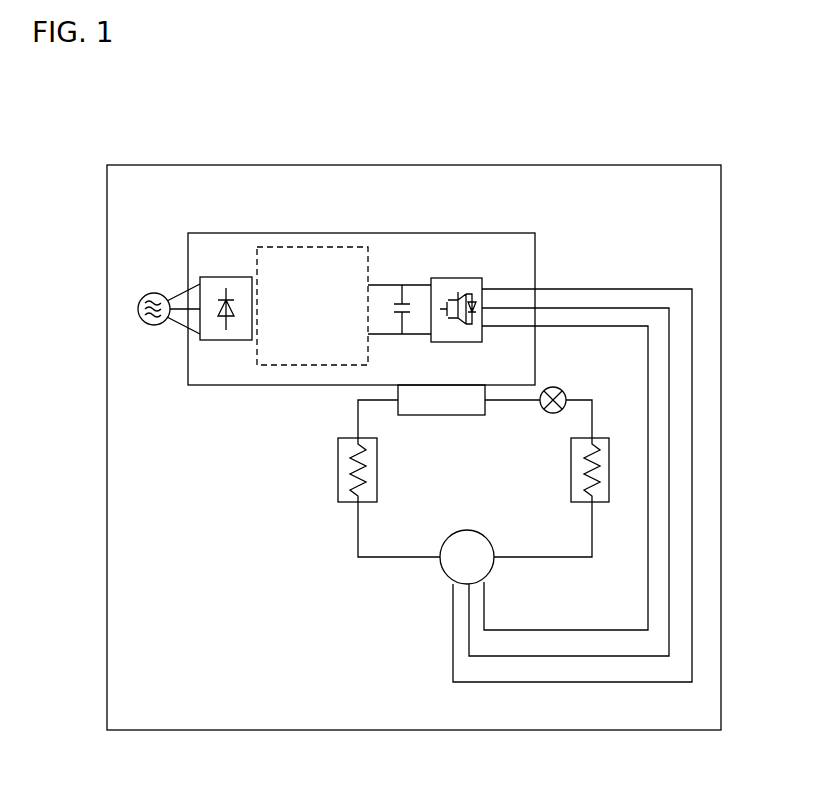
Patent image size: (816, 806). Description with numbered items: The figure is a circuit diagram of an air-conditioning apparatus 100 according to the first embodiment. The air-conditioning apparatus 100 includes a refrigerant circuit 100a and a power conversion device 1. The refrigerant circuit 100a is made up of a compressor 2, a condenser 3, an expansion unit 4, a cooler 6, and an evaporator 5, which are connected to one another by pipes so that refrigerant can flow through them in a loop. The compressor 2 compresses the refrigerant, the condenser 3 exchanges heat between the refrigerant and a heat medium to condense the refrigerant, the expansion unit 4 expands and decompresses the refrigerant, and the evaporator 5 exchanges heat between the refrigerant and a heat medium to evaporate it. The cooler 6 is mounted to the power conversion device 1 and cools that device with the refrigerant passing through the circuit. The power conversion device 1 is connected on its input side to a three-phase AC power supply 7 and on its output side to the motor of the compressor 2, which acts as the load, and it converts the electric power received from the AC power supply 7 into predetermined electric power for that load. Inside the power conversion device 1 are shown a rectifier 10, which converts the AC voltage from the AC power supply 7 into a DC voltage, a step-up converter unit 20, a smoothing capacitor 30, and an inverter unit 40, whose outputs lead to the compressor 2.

The air-conditioning apparatus 100 is at (662, 165).
The refrigerant circuit 100a is at (396, 574).
The power conversion device 1 is at (430, 233).
The step-up converter unit 20 is at (305, 247).
The rectifier 10 is at (228, 277).
The three-phase AC power supply 7 is at (154, 293).
The smoothing capacitor 30 is at (405, 300).
The inverter unit 40 is at (456, 278).
The compressor 2 is at (466, 530).
The cooler 6 is at (410, 415).
The evaporator 5 is at (338, 468).
The condenser 3 is at (612, 480).
The expansion unit 4 is at (546, 417).